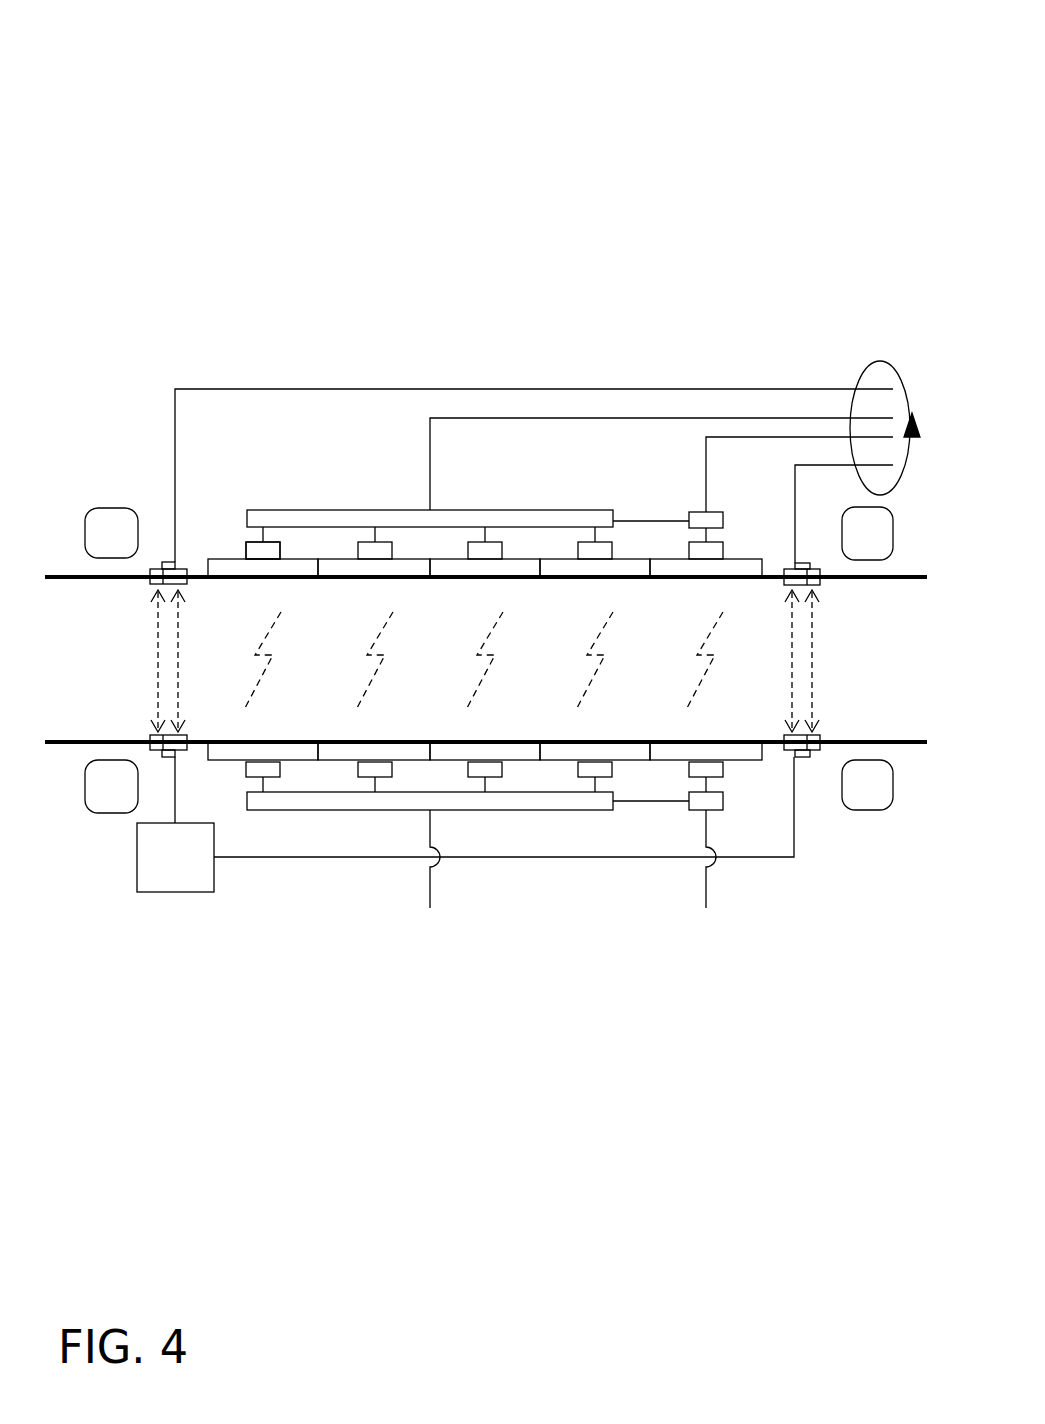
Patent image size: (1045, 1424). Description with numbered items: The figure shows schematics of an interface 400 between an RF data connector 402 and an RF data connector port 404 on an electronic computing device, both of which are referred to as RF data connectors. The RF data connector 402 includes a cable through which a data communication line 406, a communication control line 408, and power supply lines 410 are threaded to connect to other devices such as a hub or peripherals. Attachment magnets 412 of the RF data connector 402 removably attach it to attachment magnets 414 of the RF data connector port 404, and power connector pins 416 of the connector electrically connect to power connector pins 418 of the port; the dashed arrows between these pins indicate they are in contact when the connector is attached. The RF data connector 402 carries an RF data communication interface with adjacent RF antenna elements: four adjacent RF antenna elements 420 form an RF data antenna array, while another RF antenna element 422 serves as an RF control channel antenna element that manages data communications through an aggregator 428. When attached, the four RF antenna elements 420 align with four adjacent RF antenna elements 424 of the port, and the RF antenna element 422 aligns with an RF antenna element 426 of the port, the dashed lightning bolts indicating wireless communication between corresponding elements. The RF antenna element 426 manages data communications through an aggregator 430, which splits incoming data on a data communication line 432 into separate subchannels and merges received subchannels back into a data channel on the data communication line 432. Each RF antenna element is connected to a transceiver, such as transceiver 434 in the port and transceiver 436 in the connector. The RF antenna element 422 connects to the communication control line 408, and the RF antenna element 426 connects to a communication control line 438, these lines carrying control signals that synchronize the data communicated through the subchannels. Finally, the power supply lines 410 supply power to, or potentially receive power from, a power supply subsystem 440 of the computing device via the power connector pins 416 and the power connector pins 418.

The interface 400 is at (162, 51).
The RF data connector 402 is at (536, 370).
The RF data connector port 404 is at (536, 974).
The data communication line 406 is at (430, 449).
The communication control line 408 is at (706, 448).
The power supply lines 410 is at (175, 403).
The attachment magnets 412 is at (118, 525).
The attachment magnets 414 is at (118, 792).
The power connector pins 416 is at (152, 585).
The power connector pins 418 is at (152, 736).
The RF antenna elements 420 is at (245, 606).
The RF antenna element 422 is at (687, 606).
The RF antenna elements 424 is at (245, 737).
The RF antenna element 426 is at (687, 737).
The aggregator 428 is at (277, 508).
The aggregator 430 is at (348, 810).
The data communication line 432 is at (430, 893).
The transceiver 434 is at (724, 772).
The transceiver 436 is at (245, 552).
The communication control line 438 is at (707, 900).
The power supply subsystem 440 is at (156, 870).